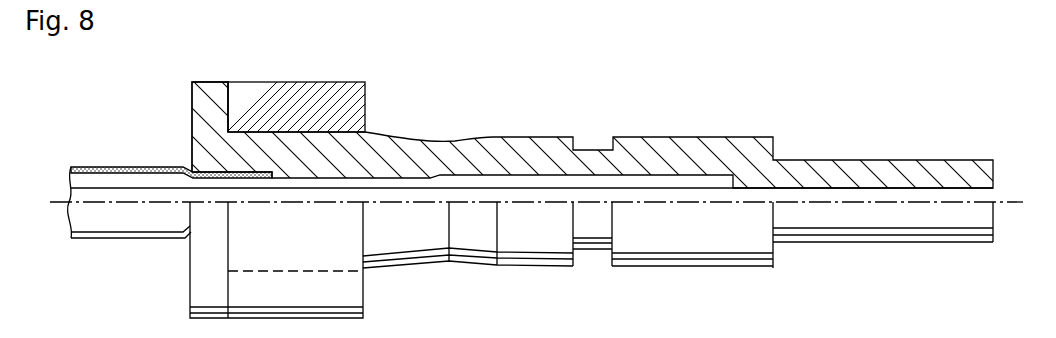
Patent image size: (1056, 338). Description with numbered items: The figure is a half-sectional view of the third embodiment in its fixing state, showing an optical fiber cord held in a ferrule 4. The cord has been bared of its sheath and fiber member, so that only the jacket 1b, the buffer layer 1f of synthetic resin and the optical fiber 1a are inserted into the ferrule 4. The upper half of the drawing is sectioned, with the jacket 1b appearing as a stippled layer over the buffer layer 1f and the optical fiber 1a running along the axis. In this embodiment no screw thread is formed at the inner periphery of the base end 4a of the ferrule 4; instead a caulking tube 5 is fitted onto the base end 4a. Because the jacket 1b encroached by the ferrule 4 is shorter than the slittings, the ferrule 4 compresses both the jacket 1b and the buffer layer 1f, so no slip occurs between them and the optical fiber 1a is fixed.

The optical fiber 1a is at (987, 195).
The jacket 1b is at (103, 167).
The buffer layer 1f is at (637, 185).
The ferrule 4 is at (548, 137).
The base end of ferrule 4a is at (203, 105).
The caulking tube 5 is at (345, 100).